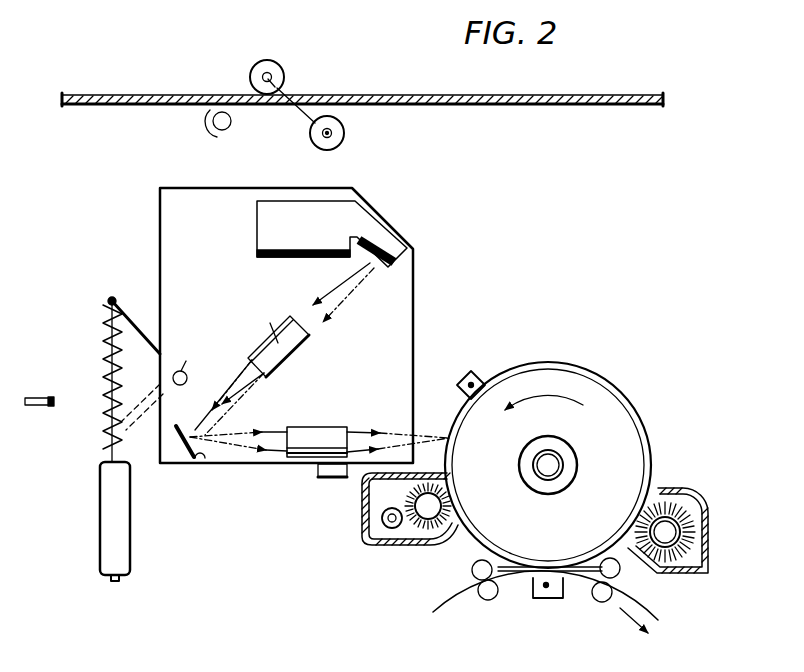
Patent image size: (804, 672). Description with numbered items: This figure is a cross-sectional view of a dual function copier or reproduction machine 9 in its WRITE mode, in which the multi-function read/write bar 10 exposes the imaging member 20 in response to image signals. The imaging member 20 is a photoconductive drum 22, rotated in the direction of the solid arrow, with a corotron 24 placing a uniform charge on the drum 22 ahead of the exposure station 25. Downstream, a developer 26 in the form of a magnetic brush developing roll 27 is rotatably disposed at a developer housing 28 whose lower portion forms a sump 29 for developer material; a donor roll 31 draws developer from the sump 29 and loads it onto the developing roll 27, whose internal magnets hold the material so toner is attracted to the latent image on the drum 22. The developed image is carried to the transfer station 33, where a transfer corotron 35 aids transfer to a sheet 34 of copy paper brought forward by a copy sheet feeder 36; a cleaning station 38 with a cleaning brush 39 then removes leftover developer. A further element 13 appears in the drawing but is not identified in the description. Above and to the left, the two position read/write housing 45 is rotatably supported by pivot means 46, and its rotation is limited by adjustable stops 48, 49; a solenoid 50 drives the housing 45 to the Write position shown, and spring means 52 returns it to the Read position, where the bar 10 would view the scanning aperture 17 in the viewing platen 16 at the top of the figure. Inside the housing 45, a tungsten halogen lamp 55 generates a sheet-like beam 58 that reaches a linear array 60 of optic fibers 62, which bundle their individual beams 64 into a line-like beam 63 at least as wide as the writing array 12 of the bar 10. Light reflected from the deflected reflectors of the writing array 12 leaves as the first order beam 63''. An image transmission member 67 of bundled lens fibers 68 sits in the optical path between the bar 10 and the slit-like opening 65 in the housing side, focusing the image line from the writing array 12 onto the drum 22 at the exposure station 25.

The copier or reproduction machine 9 is at (441, 231).
The read/write bar 10 is at (171, 449).
The writing array 12 is at (200, 464).
The copy sheet path 13 is at (676, 600).
The viewing platen 16 is at (514, 105).
The scanning aperture 17 is at (244, 99).
The imaging member 20 is at (591, 363).
The photoconductive drum 22 is at (644, 440).
The corotron 24 is at (476, 370).
The exposure station 25 is at (462, 438).
The developer 26 is at (349, 551).
The magnetic brush developing roll 27 is at (392, 548).
The developer housing 28 is at (441, 545).
The sump 29 is at (374, 546).
The donor roll 31 is at (368, 519).
The transfer station 33 is at (573, 523).
The sheet of copy paper 34 is at (514, 576).
The transfer corotron 35 is at (553, 598).
The copy sheet feeder 36 is at (486, 600).
The cleaning station 38 is at (673, 480).
The cleaning brush 39 is at (687, 517).
The read/write housing 45 is at (146, 251).
The pivot means 46 is at (187, 359).
The stop 48 is at (333, 478).
The stop 49 is at (56, 398).
The solenoid 50 is at (122, 541).
The spring means 52 is at (103, 347).
The tungsten halogen lamp 55 is at (256, 248).
The beam of light 58 is at (345, 295).
The linear array of optic fibers 60 is at (304, 349).
The optic fibers 62 is at (275, 340).
The line-like beam of light 63 is at (226, 379).
The first order beam 63'' is at (294, 425).
The individual light beams 64 is at (231, 392).
The slit-like opening 65 is at (446, 435).
The image transmission member 67 is at (312, 426).
The lens fibers 68 is at (340, 427).